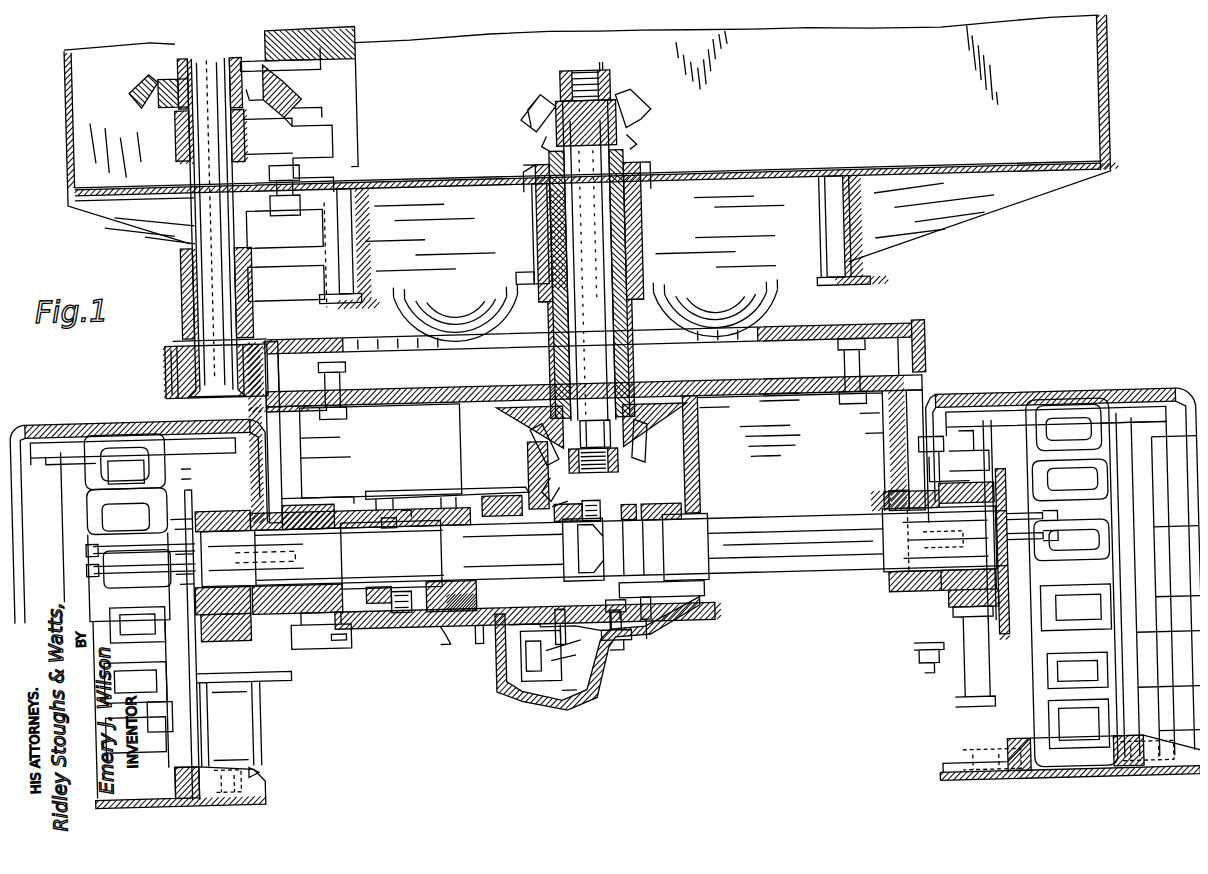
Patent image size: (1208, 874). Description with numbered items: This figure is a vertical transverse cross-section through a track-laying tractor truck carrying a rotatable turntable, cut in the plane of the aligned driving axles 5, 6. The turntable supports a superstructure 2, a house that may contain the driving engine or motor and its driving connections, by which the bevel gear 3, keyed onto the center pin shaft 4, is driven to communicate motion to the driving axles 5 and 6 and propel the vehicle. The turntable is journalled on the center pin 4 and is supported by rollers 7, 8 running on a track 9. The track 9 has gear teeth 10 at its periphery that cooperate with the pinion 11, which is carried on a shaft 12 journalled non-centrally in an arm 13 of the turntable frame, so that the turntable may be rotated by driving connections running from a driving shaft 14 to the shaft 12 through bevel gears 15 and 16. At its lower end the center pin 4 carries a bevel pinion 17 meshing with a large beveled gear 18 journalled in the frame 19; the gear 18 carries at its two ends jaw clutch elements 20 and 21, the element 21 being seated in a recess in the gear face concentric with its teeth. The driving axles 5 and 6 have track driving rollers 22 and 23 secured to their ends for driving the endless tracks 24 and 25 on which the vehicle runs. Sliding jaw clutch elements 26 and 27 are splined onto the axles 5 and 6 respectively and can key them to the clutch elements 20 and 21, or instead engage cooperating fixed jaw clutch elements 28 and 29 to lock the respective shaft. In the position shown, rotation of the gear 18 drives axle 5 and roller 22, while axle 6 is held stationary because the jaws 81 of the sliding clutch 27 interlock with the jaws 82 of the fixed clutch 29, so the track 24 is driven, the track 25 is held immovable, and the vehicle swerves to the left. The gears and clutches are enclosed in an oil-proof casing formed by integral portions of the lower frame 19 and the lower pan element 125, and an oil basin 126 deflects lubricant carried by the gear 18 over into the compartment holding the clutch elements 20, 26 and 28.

The superstructure 2 is at (1097, 74).
The bevel gear 3 is at (553, 110).
The center pin shaft 4 is at (597, 170).
The driving axle 5 is at (330, 612).
The driving axle 6 is at (790, 570).
The roller 7 is at (763, 304).
The roller 8 is at (408, 303).
The track 9 is at (898, 327).
The gear teeth 10 is at (927, 358).
The pinion 11 is at (167, 355).
The shaft 12 is at (198, 166).
The arm 13 is at (183, 123).
The driving shaft 14 is at (350, 45).
The bevel gear 15 is at (158, 68).
The bevel gear 16 is at (275, 53).
The bevel pinion 17 is at (698, 442).
The bevel gear 18 is at (564, 482).
The frame 19 is at (766, 396).
The jaw clutch element 20 is at (435, 622).
The jaw clutch element 21 is at (569, 617).
The track driving roller 22 is at (253, 623).
The track driving roller 23 is at (941, 606).
The endless track 24 is at (100, 409).
The endless track 25 is at (1061, 404).
The sliding jaw clutch element 26 is at (374, 608).
The sliding jaw clutch element 27 is at (621, 601).
The fixed jaw clutch element 28 is at (320, 498).
The fixed jaw clutch element 29 is at (661, 505).
The jaws 81 is at (608, 503).
The jaws 82 is at (628, 505).
The lower pan element 125 is at (566, 677).
The oil basin 126 is at (399, 485).